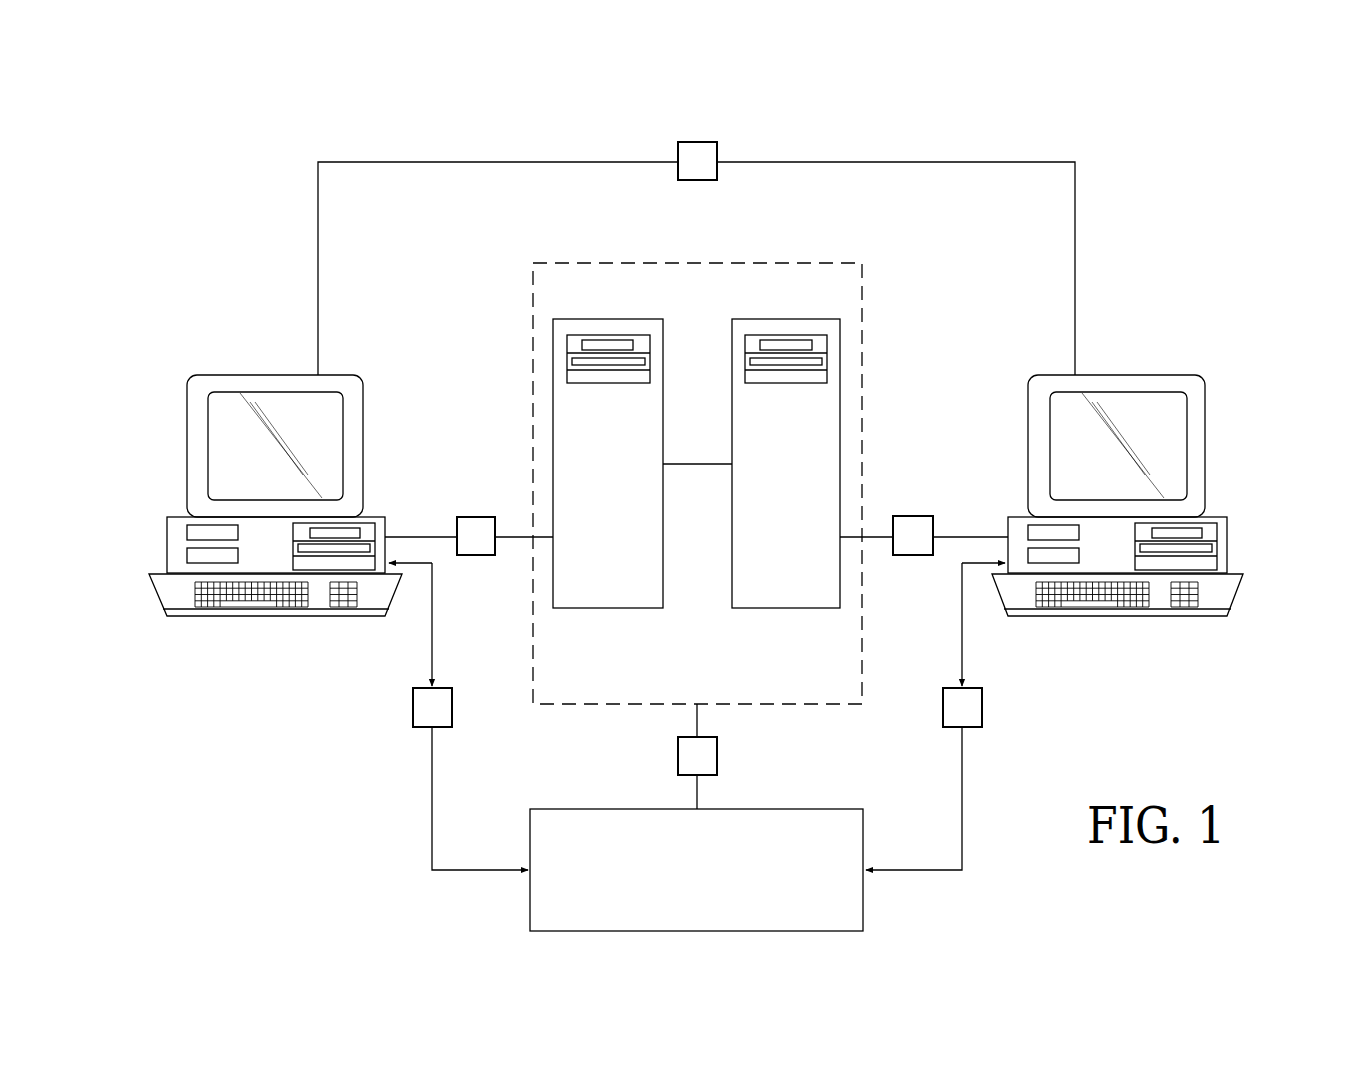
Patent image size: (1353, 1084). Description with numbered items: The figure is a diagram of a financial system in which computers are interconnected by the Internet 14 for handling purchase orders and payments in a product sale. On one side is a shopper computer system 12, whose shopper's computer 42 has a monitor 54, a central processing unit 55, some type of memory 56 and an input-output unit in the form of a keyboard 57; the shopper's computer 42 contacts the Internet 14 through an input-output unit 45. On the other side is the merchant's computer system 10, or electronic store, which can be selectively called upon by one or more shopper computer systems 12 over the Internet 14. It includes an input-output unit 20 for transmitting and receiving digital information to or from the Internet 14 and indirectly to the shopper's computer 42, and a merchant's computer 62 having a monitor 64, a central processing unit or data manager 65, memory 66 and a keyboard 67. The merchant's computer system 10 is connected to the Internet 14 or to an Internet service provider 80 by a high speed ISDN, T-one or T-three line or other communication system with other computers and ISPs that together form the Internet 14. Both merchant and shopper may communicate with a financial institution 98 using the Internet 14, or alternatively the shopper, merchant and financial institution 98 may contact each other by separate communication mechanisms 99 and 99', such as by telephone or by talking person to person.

The merchant's computer system 10 is at (696, 268).
The shopper computer system 12 is at (258, 452).
The Internet 14 is at (618, 263).
The input-output unit 20 is at (914, 535).
The shopper's computer 42 is at (220, 368).
The input-output unit 45 is at (474, 525).
The monitor 54 is at (363, 417).
The central processing unit 55 is at (195, 533).
The memory 56 is at (190, 557).
The keyboard 57 is at (177, 592).
The merchant's computer 62 is at (1145, 368).
The monitor 64 is at (1205, 400).
The central processing unit 65 is at (1033, 533).
The memory 66 is at (1032, 557).
The keyboard 67 is at (1222, 592).
The Internet service provider 80 is at (797, 608).
The financial institution 98 is at (863, 905).
The separate communication mechanism 99 is at (526, 488).
The separate communication mechanism 99' is at (964, 716).